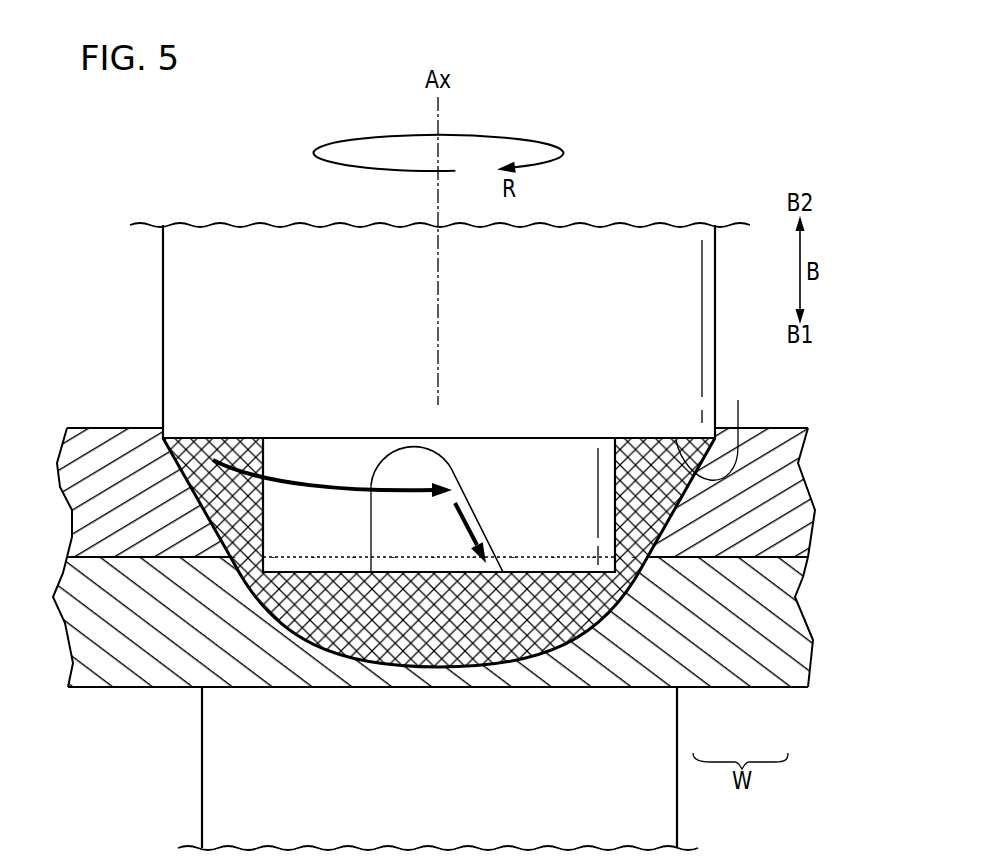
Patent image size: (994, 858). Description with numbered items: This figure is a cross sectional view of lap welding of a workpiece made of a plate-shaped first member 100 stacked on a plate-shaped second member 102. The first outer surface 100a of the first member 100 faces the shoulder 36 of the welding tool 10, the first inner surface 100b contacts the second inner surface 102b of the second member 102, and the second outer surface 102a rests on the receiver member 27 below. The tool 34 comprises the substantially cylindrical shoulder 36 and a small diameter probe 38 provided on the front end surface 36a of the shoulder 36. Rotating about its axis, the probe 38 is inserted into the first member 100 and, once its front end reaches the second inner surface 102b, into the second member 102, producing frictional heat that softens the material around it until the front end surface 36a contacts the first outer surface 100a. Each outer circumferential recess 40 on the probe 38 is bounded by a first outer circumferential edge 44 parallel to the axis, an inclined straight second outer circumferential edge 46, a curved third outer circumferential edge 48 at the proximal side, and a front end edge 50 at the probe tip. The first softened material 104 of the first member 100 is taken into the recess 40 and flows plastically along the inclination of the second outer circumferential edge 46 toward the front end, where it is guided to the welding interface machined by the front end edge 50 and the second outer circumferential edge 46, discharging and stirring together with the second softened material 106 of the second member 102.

The welding tool 10 is at (433, 295).
The tool 34 is at (433, 295).
The shoulder 36 is at (185, 290).
The front end surface of the shoulder 36a is at (720, 427).
The probe 38 is at (562, 455).
The outer circumferential recess 40 is at (398, 532).
The first outer circumferential edge 44 is at (370, 513).
The second outer circumferential edge 46 is at (482, 525).
The third outer circumferential edge 48 is at (395, 449).
The front end edge 50 is at (408, 573).
The receiver member 27 is at (220, 798).
The first member 100 is at (435, 546).
The first outer surface 100a is at (140, 428).
The first inner surface 100b is at (117, 557).
The second member 102 is at (435, 656).
The second outer surface 102a is at (112, 690).
The second inner surface 102b is at (197, 557).
The first softened material 104 is at (237, 455).
The second softened material 106 is at (462, 650).